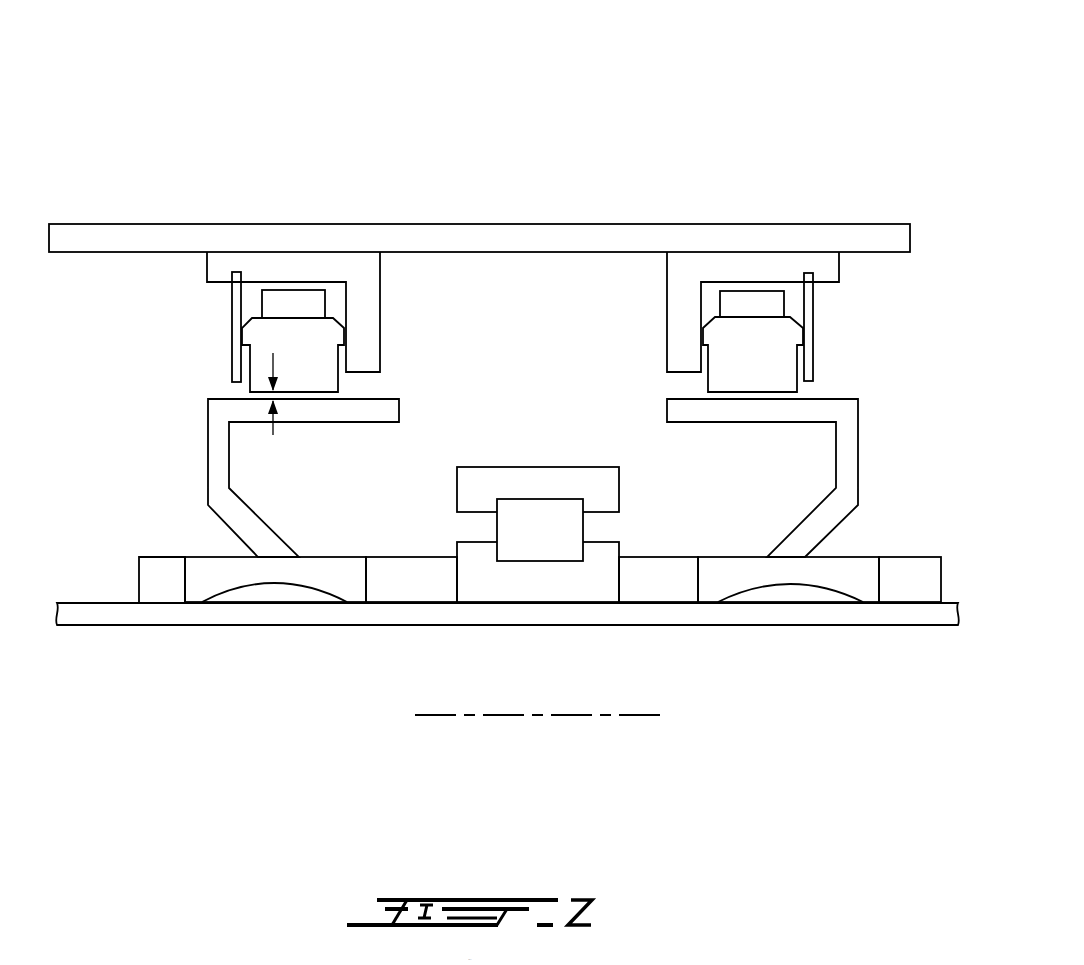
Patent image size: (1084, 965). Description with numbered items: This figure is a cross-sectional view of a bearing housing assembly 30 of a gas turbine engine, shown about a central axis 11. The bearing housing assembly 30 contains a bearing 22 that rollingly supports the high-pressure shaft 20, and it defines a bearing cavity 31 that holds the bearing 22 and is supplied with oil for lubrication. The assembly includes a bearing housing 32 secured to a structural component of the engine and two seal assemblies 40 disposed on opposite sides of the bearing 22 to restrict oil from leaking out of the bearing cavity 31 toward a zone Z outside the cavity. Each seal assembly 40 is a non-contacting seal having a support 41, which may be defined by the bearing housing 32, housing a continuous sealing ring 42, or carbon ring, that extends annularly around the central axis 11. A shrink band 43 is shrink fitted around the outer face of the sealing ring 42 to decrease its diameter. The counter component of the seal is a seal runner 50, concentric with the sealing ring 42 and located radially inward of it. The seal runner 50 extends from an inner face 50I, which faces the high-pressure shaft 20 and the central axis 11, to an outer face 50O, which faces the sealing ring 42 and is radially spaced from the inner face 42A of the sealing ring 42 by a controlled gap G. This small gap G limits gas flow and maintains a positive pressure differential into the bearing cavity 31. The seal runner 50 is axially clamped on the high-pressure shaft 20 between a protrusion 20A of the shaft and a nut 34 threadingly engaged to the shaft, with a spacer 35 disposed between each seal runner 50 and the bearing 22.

The central axis 11 is at (556, 715).
The high-pressure shaft 20 is at (507, 631).
The protrusion 20A is at (162, 580).
The bearing 22 is at (525, 447).
The bearing housing assembly 30 is at (479, 130).
The bearing cavity 31 is at (380, 511).
The bearing housing 32 is at (445, 242).
The nut 34 is at (913, 582).
The spacer 35 is at (408, 578).
The seal assembly 40 is at (501, 364).
The support 41 is at (363, 296).
The sealing ring 42 is at (312, 364).
The inner face of the sealing ring 42A is at (320, 392).
The shrink band 43 is at (310, 307).
The seal runner 50 is at (458, 433).
The outer face of the seal runner 50O is at (218, 397).
The inner face of the seal runner 50I is at (293, 587).
The controlled gap G is at (273, 435).
The zone Z is at (82, 352).